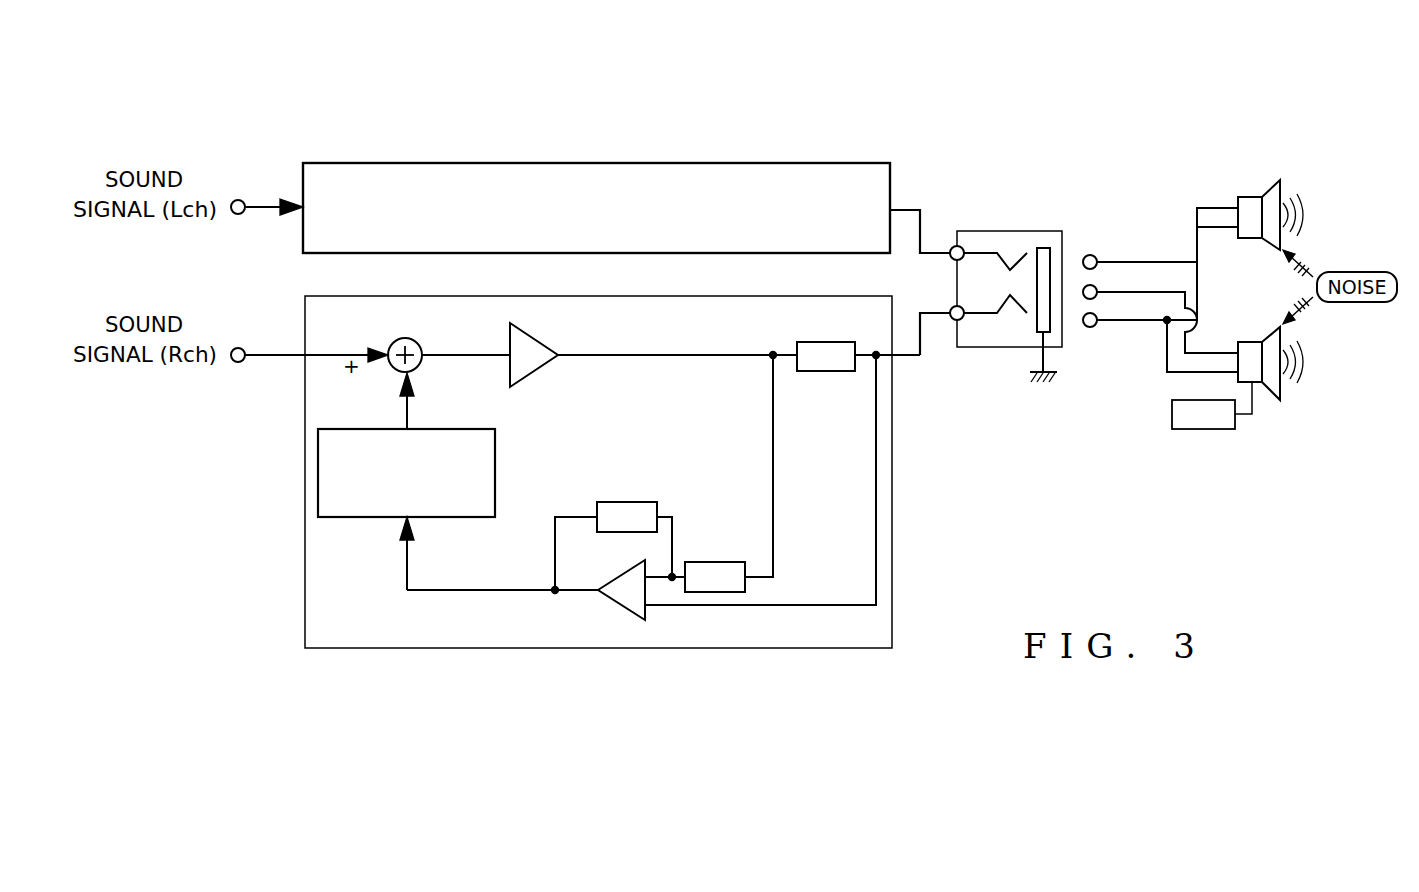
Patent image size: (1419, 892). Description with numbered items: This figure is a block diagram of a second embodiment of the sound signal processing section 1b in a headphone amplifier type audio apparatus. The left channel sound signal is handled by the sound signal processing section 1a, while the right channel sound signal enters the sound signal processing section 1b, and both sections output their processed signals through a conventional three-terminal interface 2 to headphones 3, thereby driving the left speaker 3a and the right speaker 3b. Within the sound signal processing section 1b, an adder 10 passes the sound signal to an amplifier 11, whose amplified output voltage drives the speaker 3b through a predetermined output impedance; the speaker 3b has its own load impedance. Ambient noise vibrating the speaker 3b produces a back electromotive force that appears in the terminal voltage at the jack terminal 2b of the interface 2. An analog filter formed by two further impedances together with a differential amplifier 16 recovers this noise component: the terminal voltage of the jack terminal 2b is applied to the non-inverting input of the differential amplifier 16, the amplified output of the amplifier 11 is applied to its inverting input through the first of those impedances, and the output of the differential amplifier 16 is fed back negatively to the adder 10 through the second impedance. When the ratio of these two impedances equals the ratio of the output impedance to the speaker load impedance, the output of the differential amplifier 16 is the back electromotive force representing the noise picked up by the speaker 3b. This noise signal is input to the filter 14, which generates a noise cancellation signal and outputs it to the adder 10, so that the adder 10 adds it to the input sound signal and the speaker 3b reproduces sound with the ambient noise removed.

The sound signal processing section 1a is at (447, 163).
The sound signal processing section 1b is at (397, 296).
The three-terminal interface 2 is at (1010, 231).
The jack terminal 2b is at (956, 306).
The headphones 3 is at (1219, 256).
The left speaker 3a is at (1267, 196).
The right speaker 3b is at (1270, 335).
The adder 10 is at (396, 340).
The amplifier 11 is at (510, 333).
The filter 14 is at (497, 497).
The differential amplifier 16 is at (622, 605).